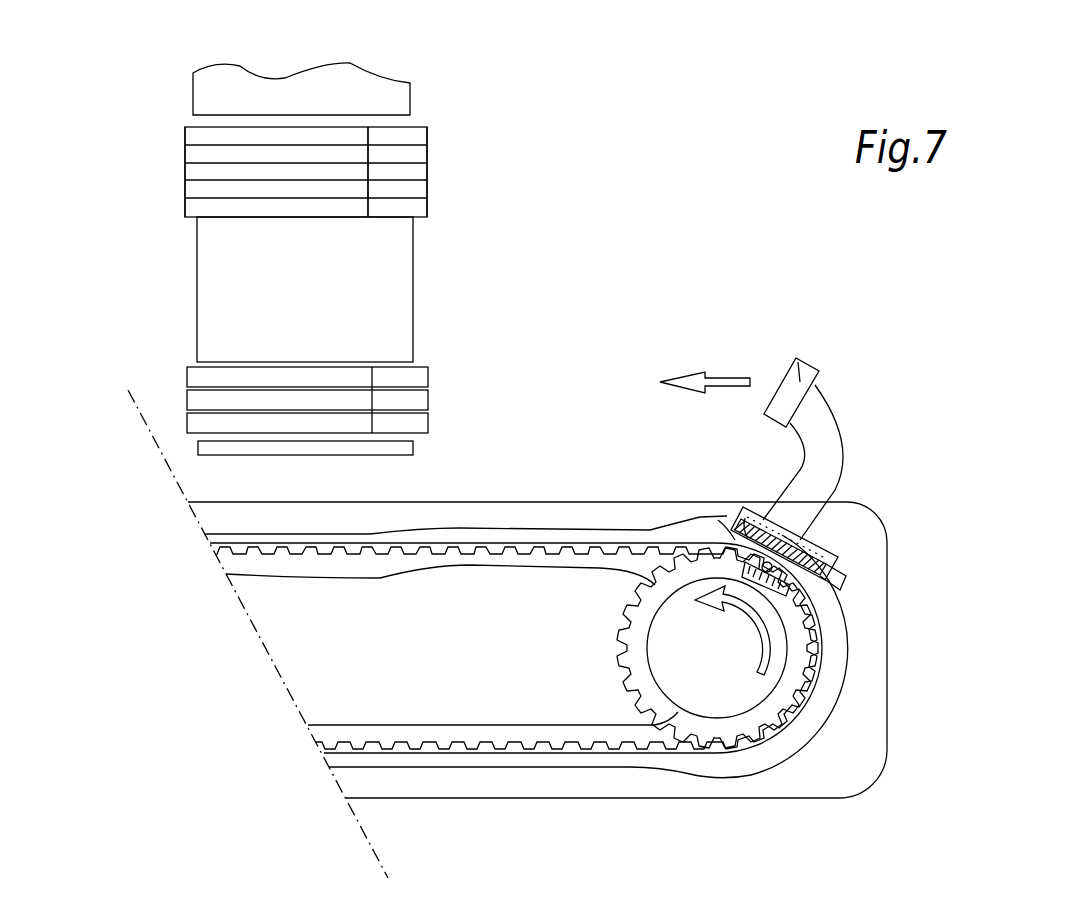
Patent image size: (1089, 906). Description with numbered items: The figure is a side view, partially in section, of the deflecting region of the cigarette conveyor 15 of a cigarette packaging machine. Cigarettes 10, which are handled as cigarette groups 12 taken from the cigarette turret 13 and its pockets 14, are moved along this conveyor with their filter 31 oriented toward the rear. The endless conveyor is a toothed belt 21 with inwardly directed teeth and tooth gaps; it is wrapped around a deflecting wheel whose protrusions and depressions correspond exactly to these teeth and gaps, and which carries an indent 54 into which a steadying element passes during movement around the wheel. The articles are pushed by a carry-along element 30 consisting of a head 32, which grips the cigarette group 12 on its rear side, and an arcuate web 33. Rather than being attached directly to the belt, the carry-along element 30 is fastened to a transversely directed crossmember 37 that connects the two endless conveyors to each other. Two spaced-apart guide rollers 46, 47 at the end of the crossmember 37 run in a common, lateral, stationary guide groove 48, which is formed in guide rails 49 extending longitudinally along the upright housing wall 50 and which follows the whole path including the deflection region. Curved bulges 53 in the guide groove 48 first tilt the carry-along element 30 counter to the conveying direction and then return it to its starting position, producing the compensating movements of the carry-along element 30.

The cigarettes 10 is at (185, 207).
The cigarette groups 12 is at (464, 182).
The cigarette turret 13 is at (459, 257).
The pockets 14 is at (385, 362).
The cigarette conveyor 15 is at (594, 406).
The toothed belt 21 is at (562, 550).
The carry-along element 30 is at (866, 406).
The filter 31 is at (408, 150).
The head 32 is at (798, 355).
The web 33 is at (822, 430).
The crossmember 37 is at (823, 505).
The guide roller 46 is at (715, 510).
The guide roller 47 is at (847, 598).
The guide groove 48 is at (266, 528).
The guide rails 49 is at (207, 513).
The housing wall 50 is at (872, 650).
The bulges 53 is at (393, 537).
The indent 54 is at (757, 597).